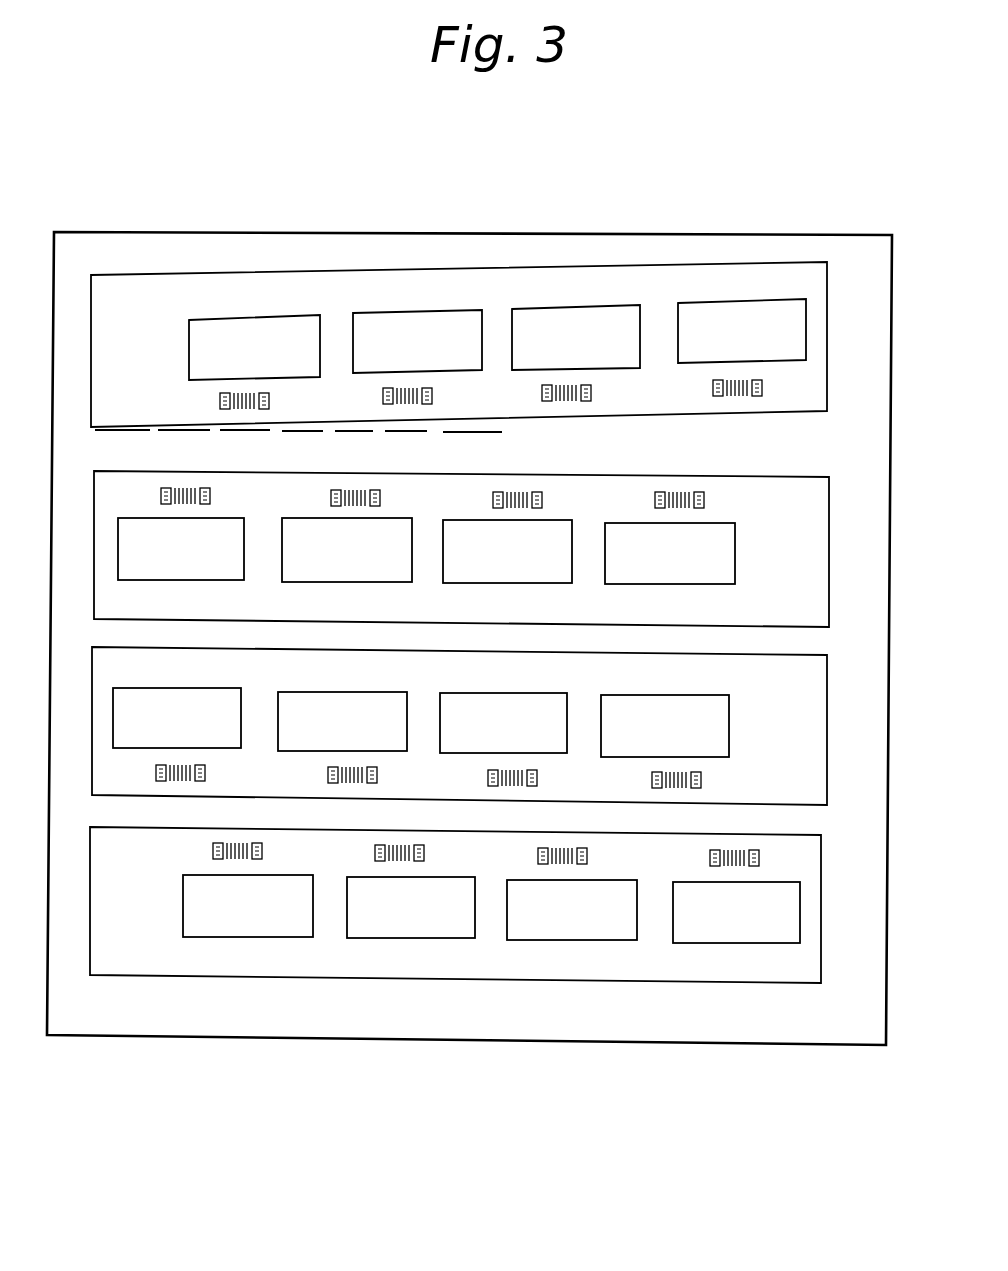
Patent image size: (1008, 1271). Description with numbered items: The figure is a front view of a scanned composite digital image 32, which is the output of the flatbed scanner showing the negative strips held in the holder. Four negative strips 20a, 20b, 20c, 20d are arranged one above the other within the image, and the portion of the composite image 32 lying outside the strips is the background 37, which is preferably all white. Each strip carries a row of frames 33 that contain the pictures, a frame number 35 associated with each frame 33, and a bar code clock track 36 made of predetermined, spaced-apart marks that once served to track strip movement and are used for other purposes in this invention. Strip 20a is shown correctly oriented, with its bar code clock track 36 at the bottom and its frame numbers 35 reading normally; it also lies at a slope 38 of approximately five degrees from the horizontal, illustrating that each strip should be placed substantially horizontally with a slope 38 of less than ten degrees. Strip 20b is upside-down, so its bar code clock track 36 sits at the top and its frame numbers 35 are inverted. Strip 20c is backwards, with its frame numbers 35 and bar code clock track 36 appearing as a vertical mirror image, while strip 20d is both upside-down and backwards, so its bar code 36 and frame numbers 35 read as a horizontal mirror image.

The negative strip 20a is at (827, 348).
The negative strip 20b is at (829, 575).
The negative strip 20c is at (827, 747).
The negative strip 20d is at (821, 942).
The scanned composite digital image 32 is at (477, 192).
The frame 33 is at (378, 311).
The frame number 35 is at (203, 398).
The bar code clock track 36 is at (163, 489).
The background 37 is at (702, 1013).
The slope 38 is at (455, 421).